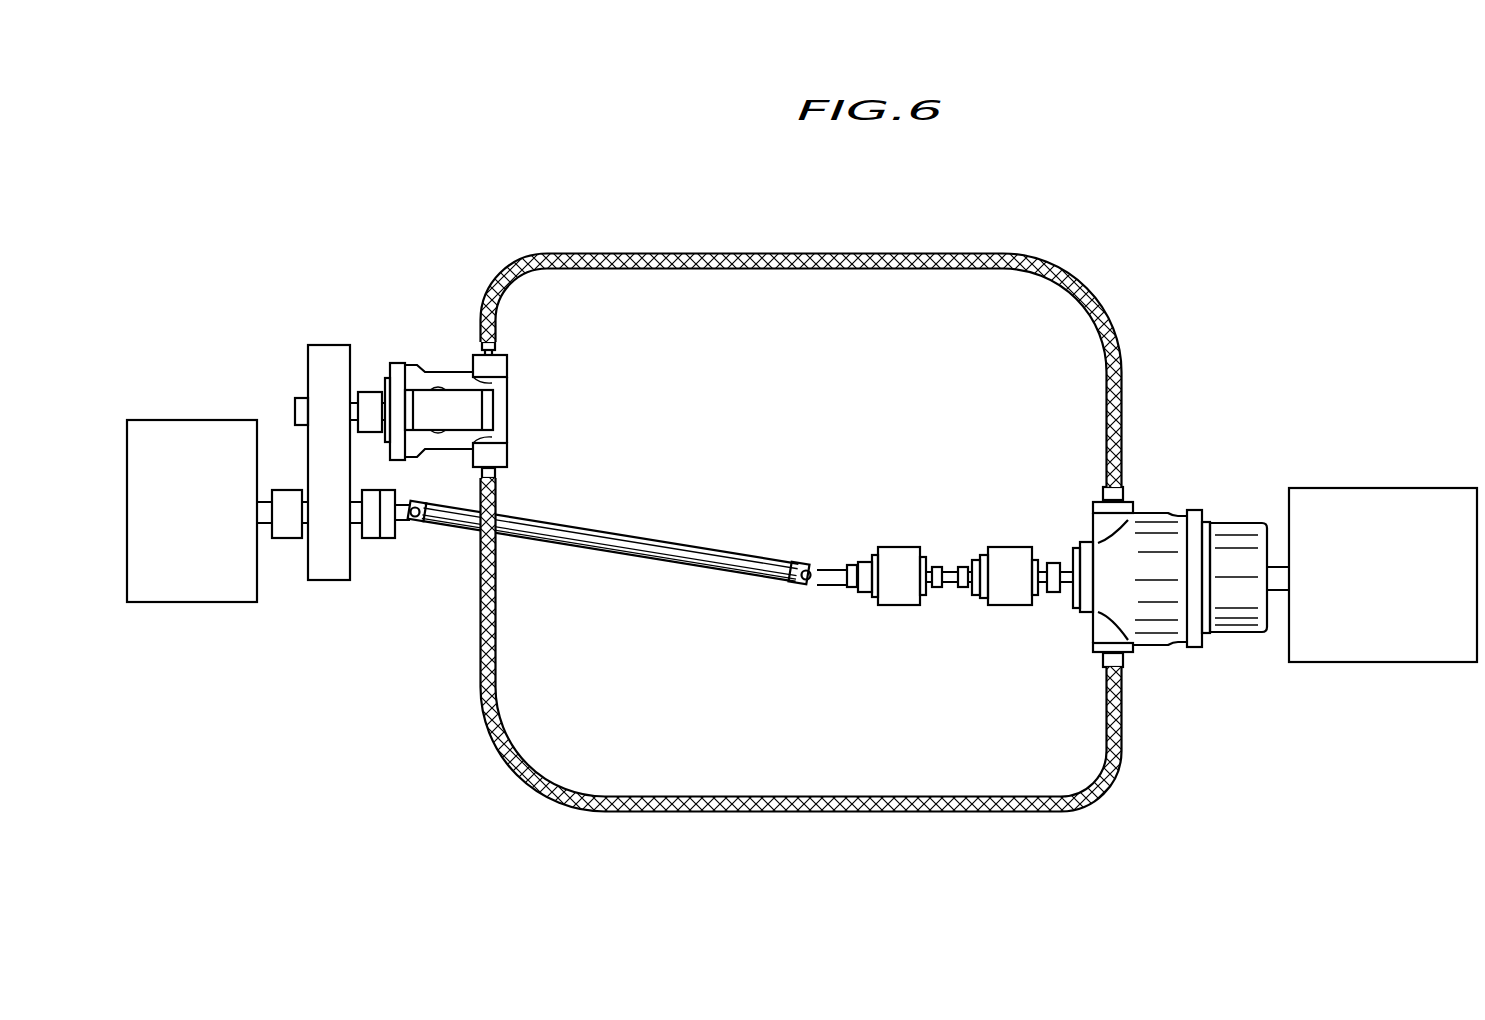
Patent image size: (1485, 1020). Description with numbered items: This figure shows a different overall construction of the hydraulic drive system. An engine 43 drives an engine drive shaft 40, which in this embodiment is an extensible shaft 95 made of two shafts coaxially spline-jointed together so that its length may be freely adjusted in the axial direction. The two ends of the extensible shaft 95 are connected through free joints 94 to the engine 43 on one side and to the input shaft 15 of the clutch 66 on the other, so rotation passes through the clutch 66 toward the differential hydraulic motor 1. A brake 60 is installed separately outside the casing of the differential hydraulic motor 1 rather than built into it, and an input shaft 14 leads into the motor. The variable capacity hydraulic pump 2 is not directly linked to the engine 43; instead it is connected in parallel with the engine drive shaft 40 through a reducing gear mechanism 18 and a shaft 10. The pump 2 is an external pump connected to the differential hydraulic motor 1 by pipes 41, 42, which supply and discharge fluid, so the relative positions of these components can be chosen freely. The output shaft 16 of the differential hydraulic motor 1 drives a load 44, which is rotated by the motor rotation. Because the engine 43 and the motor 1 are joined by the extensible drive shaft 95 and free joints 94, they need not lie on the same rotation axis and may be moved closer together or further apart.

The differential hydraulic motor 1 is at (1220, 542).
The variable capacity hydraulic pump 2 is at (466, 374).
The shaft 10 is at (372, 400).
The input shaft 14 is at (1062, 596).
The input shaft of the clutch 15 is at (837, 587).
The output shaft 16 is at (1280, 592).
The reducing gear mechanism 18 is at (345, 582).
The engine drive shaft 40 is at (703, 548).
The pipe 41 is at (703, 270).
The pipe 42 is at (690, 796).
The engine 43 is at (232, 603).
The load 44 is at (1399, 663).
The brake 60 is at (1007, 548).
The clutch 66 is at (893, 548).
The free joint 94 is at (415, 526).
The extensible shaft 95 is at (765, 560).